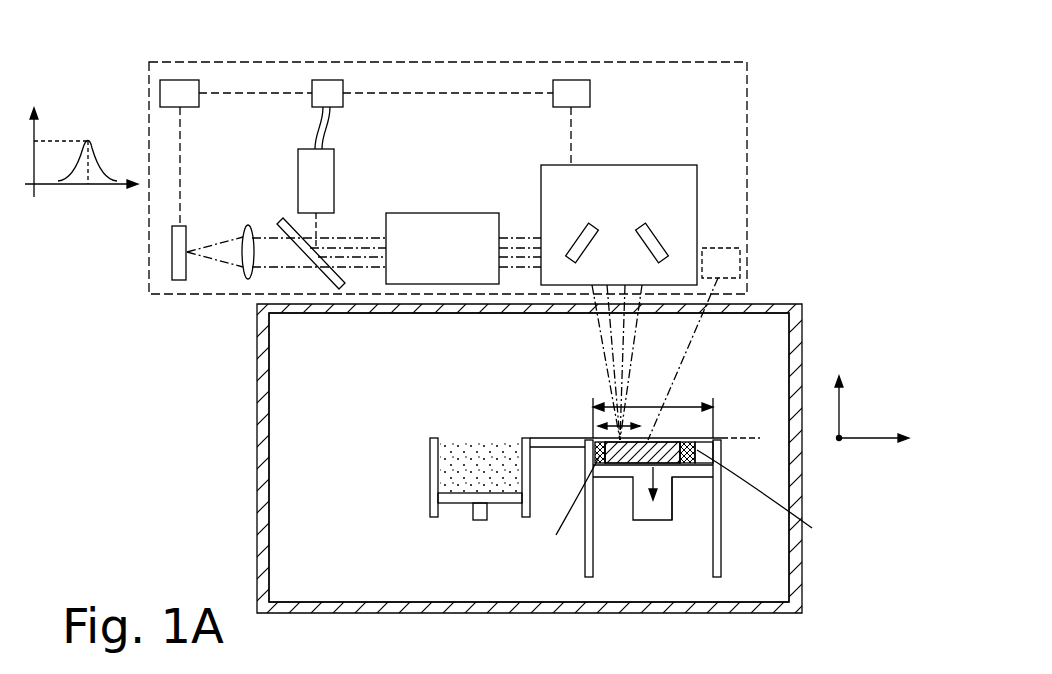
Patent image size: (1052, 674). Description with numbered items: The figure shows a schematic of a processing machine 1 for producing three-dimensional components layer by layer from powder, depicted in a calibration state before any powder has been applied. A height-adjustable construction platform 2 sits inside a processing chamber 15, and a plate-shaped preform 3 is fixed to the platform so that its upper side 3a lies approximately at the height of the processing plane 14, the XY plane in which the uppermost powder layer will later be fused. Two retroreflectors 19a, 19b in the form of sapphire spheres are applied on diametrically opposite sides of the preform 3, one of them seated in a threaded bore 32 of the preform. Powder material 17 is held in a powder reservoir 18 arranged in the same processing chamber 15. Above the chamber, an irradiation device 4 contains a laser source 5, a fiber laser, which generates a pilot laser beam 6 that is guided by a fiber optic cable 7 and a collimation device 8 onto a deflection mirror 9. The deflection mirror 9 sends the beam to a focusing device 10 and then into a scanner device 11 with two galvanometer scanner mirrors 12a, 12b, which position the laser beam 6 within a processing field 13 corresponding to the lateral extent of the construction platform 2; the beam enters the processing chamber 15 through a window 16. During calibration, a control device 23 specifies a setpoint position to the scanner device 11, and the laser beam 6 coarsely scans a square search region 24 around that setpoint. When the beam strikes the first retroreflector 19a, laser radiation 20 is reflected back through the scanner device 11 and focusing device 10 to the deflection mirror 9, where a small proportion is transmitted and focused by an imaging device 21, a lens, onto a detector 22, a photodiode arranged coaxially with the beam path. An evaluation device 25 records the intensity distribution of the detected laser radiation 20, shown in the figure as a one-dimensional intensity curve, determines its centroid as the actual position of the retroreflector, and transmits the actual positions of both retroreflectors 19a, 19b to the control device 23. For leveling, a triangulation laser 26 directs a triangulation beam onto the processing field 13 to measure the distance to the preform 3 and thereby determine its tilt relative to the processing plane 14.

The processing machine 1 is at (468, 306).
The construction platform 2 is at (648, 520).
The preform 3 is at (607, 445).
The upper side of the preform 3a is at (683, 437).
The irradiation device 4 is at (413, 58).
The laser source 5 is at (330, 92).
The laser beam 6 is at (323, 230).
The fiber optic cable 7 is at (315, 125).
The collimation device 8 is at (323, 177).
The deflection mirror 9 is at (305, 248).
The focusing device 10 is at (452, 233).
The scanner device 11 is at (680, 221).
The first scanner mirror 12a is at (580, 230).
The second scanner mirror 12b is at (654, 230).
The processing field 13 is at (653, 427).
The processing plane 14 is at (740, 440).
The processing chamber 15 is at (262, 402).
The window 16 is at (733, 307).
The powder material 17 is at (433, 460).
The powder reservoir 18 is at (433, 500).
The first retroreflector 19a is at (610, 457).
The second retroreflector 19b is at (692, 455).
The laser radiation 20 is at (598, 333).
The imaging device 21 is at (245, 263).
The detector 22 is at (172, 265).
The control device 23 is at (575, 90).
The search region 24 is at (620, 423).
The evaluation device 25 is at (182, 90).
The triangulation laser 26 is at (727, 258).
The threaded bore 32 is at (673, 478).